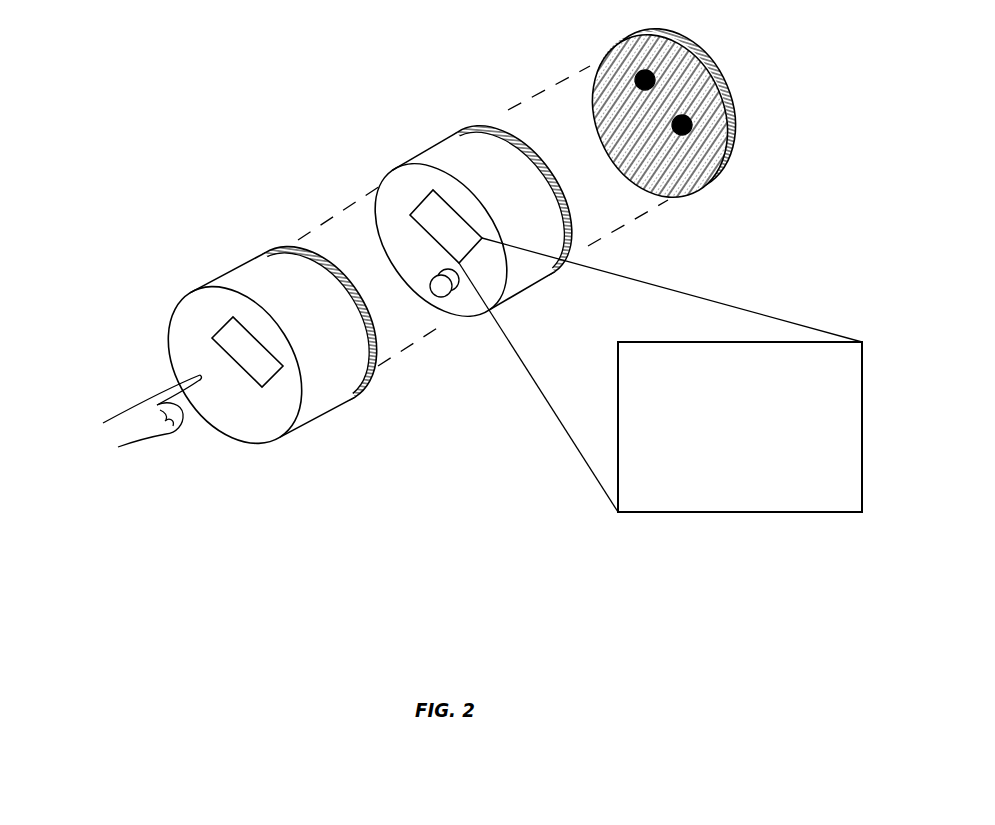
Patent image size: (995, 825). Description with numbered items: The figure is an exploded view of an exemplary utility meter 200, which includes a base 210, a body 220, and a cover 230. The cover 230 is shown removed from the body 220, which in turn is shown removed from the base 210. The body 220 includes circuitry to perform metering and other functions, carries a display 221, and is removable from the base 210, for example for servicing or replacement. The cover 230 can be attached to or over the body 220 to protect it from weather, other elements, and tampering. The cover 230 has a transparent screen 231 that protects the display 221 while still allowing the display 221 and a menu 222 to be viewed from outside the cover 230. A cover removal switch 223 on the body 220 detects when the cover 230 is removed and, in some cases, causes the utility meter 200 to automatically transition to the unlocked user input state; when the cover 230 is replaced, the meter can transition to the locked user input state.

The utility meter 200 is at (55, 60).
The base 210 is at (621, 40).
The body 220 is at (446, 141).
The display 221 is at (418, 206).
The menu 222 is at (644, 338).
The cover removal switch 223 is at (446, 306).
The cover 230 is at (159, 333).
The transparent screen 231 is at (223, 321).